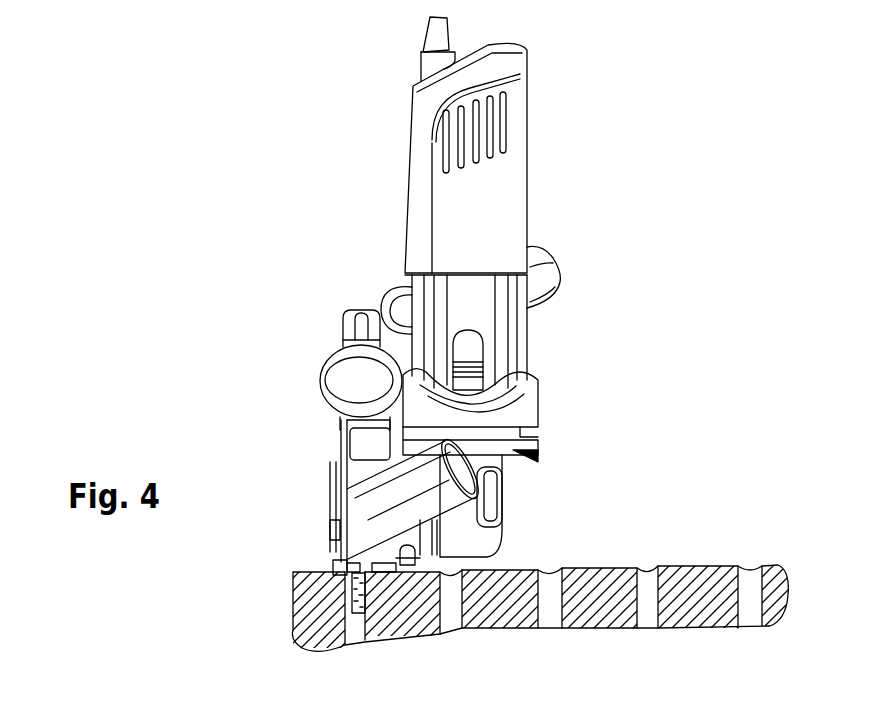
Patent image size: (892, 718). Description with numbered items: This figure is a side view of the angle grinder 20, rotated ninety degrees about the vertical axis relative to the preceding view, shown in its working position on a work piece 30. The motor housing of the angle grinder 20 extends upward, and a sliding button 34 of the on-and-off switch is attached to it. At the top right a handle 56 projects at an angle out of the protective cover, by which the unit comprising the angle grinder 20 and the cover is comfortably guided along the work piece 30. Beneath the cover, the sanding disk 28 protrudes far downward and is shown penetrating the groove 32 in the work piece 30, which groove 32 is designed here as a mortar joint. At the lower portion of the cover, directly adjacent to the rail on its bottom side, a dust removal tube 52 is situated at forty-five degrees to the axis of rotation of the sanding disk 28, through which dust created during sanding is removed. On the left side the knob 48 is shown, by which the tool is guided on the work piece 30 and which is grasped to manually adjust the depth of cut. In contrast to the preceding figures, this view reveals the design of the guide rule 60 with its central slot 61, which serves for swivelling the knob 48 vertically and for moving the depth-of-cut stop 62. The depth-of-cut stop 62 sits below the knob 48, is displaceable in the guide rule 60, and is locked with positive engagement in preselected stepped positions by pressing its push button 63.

The angle grinder 20 is at (560, 188).
The sanding disk 28 is at (355, 596).
The work piece 30 is at (702, 588).
The groove 32 is at (648, 590).
The sliding button 34 is at (470, 348).
The knob 48 is at (355, 375).
The dust removal tube 52 is at (445, 495).
The handle 56 is at (540, 262).
The guide rule 60 is at (347, 325).
The central slot 61 is at (360, 317).
The depth-of-cut stop 62 is at (336, 430).
The push button 63 is at (357, 456).